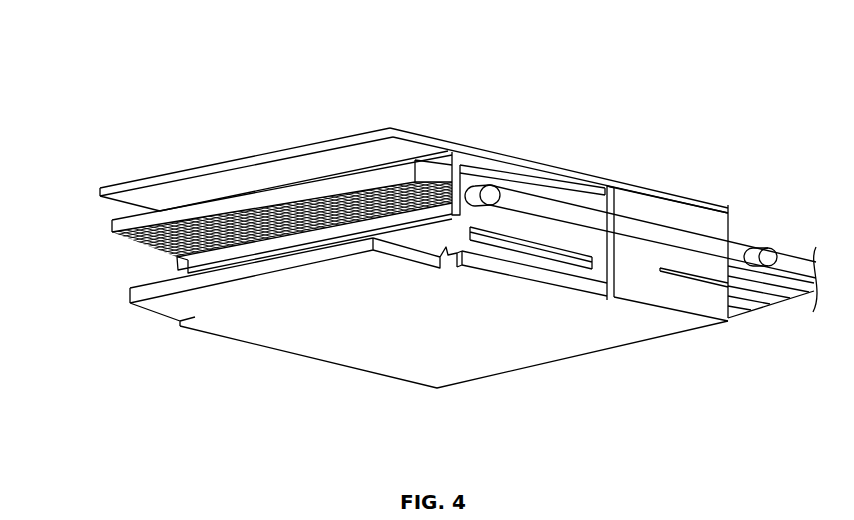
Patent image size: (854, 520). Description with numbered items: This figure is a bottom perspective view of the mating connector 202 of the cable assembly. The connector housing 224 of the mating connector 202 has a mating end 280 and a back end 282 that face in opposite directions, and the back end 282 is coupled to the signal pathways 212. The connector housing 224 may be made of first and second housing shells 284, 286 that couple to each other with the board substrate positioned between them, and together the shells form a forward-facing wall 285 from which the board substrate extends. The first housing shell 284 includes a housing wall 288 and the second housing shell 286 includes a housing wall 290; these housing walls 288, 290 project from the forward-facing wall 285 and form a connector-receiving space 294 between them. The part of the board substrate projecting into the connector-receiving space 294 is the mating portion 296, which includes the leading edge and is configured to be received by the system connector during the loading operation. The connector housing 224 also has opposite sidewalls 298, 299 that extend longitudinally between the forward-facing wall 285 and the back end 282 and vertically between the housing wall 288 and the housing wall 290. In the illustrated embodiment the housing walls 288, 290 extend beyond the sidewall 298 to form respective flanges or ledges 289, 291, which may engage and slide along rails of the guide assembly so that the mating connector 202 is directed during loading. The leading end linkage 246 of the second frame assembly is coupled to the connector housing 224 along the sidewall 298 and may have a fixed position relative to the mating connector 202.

The mating connector 202 is at (614, 245).
The signal pathways 212 is at (767, 313).
The connector housing 224 is at (517, 158).
The leading end linkage 246 is at (700, 240).
The mating end 280 is at (153, 172).
The back end 282 is at (739, 231).
The first housing shell 284 is at (665, 215).
The forward-facing wall 285 is at (415, 233).
The second housing shell 286 is at (673, 295).
The housing wall 288 is at (428, 138).
The flange 289 is at (605, 187).
The housing wall 290 is at (407, 253).
The flange 291 is at (560, 283).
The connector-receiving space 294 is at (127, 266).
The mating portion 296 is at (408, 176).
The sidewall 298 is at (557, 187).
The sidewall 299 is at (223, 336).